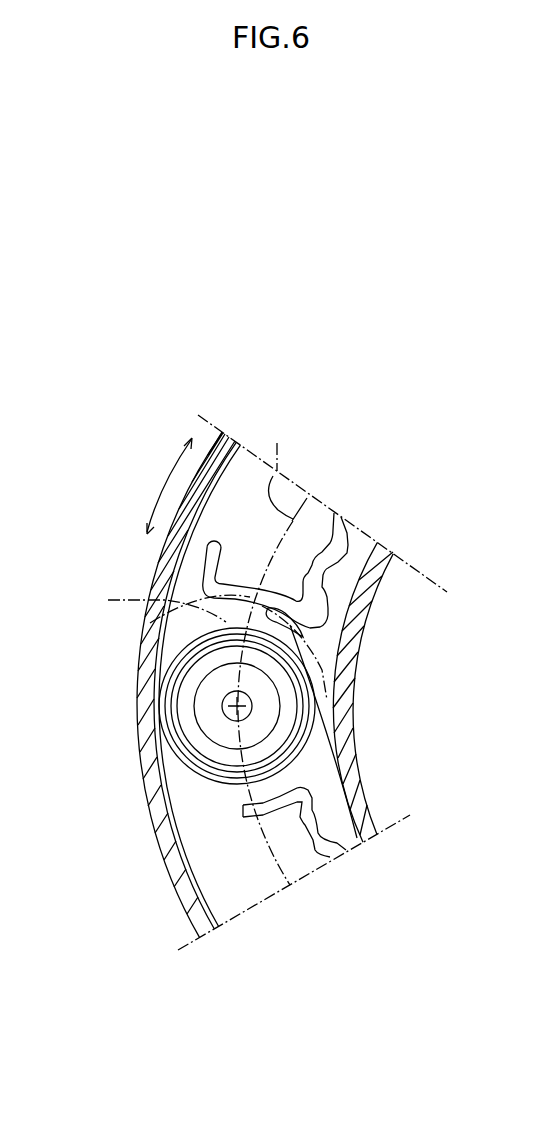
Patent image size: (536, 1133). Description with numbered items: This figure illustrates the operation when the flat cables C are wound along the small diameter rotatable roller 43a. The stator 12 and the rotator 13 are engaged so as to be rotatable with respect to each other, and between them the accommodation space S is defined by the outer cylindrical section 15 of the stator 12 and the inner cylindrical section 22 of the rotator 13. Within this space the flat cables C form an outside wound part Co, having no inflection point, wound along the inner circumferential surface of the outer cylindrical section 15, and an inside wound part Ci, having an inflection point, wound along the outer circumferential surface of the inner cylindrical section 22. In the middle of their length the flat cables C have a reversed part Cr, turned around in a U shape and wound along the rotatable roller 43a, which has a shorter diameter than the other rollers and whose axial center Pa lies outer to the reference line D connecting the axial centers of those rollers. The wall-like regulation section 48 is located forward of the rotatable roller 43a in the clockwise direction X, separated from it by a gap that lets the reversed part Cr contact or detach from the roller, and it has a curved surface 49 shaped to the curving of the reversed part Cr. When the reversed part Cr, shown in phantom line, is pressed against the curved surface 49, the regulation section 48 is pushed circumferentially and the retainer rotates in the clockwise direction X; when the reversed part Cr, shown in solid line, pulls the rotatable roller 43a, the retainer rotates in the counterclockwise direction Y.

The stator 12 is at (140, 799).
The rotator 13 is at (362, 687).
The outer cylindrical section 15 is at (157, 834).
The inner cylindrical section 22 is at (362, 764).
The regulation section 48 is at (200, 582).
The curved surface 49 is at (303, 637).
The rotatable roller 43a is at (170, 725).
The reference line D is at (272, 649).
The clockwise direction X is at (169, 478).
The counterclockwise direction Y is at (132, 526).
The reversed part Cr is at (170, 645).
The flat cables C is at (158, 663).
The axial center Pa is at (226, 699).
The outside wound part Co is at (157, 757).
The inside wound part Ci is at (332, 739).
The accommodation space S is at (227, 850).